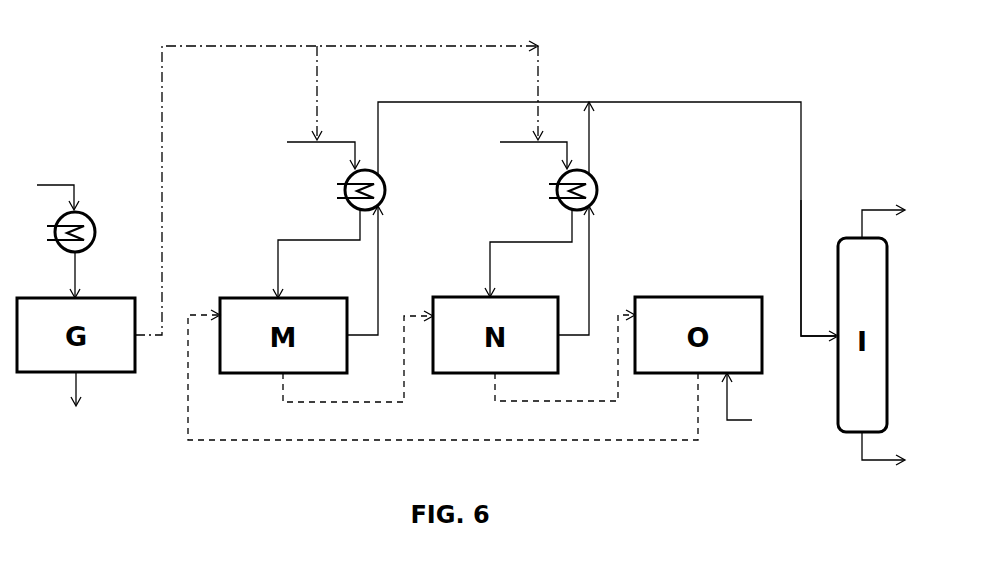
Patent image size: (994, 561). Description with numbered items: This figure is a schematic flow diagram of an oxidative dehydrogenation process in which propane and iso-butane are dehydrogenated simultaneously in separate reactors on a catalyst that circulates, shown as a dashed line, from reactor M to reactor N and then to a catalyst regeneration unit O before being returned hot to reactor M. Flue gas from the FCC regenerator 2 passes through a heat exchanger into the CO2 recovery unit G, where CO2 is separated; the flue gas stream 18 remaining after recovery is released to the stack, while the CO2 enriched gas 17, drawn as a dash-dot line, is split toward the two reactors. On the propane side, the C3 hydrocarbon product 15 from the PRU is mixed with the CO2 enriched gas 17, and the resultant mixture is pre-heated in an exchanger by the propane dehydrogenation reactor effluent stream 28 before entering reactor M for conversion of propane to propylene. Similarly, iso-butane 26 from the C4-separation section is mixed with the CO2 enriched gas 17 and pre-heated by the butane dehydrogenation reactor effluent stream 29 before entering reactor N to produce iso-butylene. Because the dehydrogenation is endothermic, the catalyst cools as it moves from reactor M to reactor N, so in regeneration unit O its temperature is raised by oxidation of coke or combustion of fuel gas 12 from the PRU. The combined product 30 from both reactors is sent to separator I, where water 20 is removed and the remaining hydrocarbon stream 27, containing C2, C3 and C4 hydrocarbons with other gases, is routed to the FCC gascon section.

The flue gas from FCC regenerator 2 is at (48, 236).
The fuel gas 12 is at (753, 401).
The C3 hydrocarbon product 15 is at (309, 150).
The CO2 enriched gas 17 is at (338, 175).
The flue gas stream 18 is at (77, 403).
The water 20 is at (900, 451).
The iso-butane 26 is at (521, 150).
The remaining hydrocarbon stream 27 is at (900, 219).
The propane dehydrogenation reactor effluent stream 28 is at (591, 219).
The butane dehydrogenation reactor effluent stream 29 is at (589, 218).
The combined product 30 is at (804, 260).